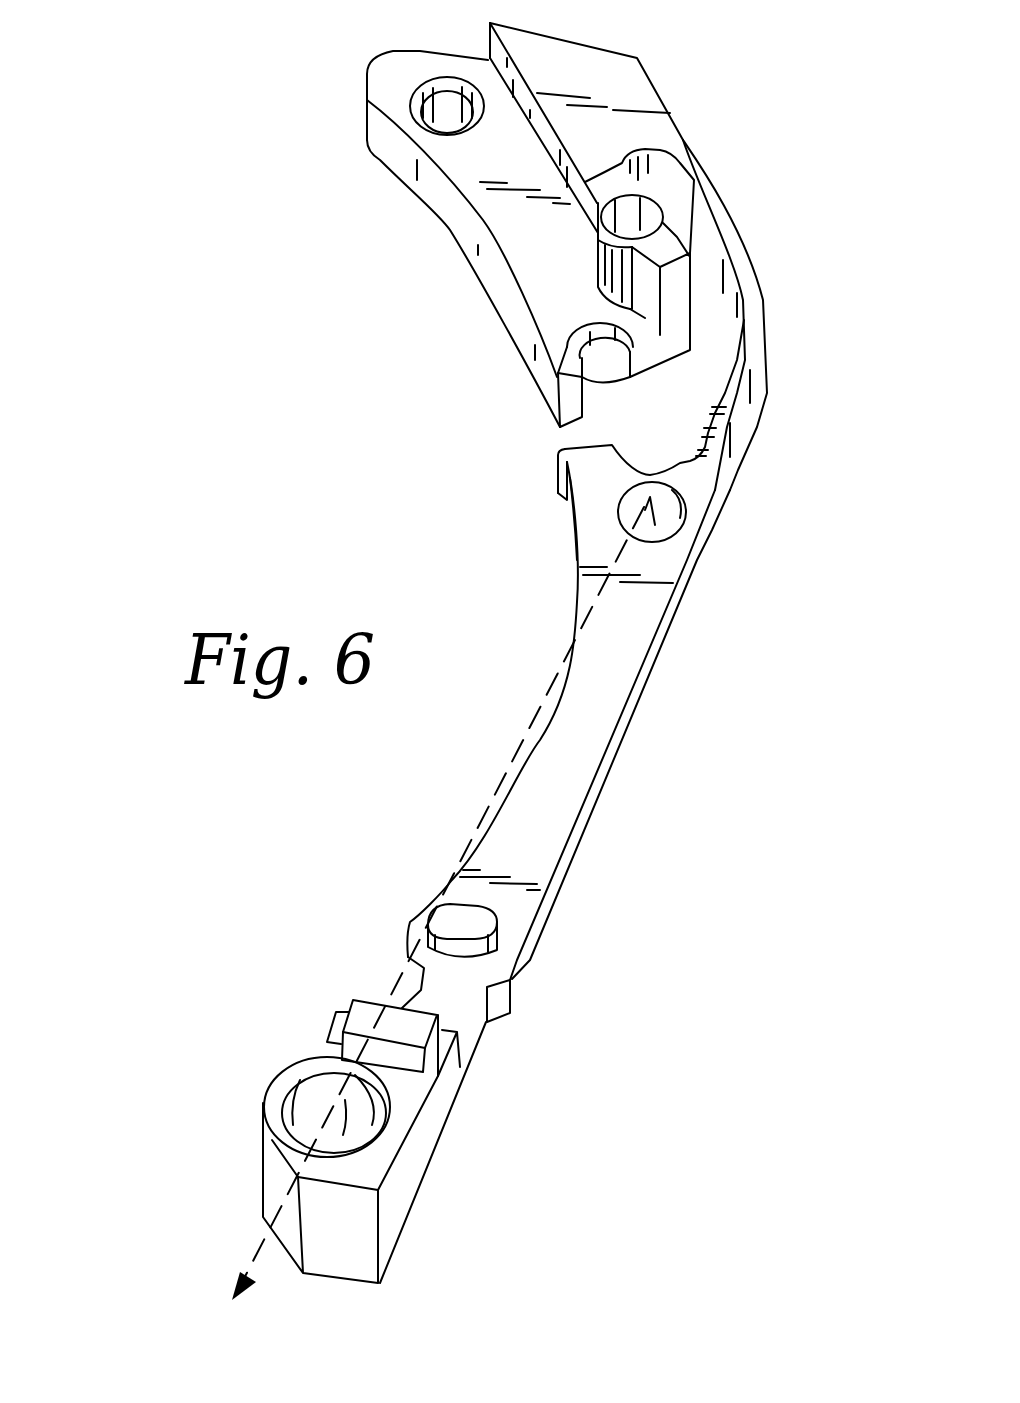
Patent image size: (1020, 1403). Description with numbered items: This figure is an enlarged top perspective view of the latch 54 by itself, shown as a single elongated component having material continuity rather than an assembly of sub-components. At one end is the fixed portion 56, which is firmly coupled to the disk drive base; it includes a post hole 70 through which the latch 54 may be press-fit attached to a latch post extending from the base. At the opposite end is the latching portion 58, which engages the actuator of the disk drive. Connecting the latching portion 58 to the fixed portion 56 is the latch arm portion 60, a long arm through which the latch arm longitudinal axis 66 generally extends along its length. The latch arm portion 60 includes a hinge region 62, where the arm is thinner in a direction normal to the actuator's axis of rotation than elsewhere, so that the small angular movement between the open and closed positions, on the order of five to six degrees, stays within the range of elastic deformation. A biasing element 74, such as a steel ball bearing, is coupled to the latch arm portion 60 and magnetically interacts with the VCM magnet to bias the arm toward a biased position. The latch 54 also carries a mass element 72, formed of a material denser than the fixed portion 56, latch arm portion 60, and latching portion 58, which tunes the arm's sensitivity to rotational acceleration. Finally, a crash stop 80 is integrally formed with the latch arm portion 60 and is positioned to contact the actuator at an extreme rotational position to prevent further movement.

The latch 54 is at (200, 114).
The fixed portion 56 is at (505, 222).
The latching portion 58 is at (477, 923).
The latch arm portion 60 is at (580, 780).
The hinge region 62 is at (720, 213).
The latch arm longitudinal axis 66 is at (257, 1260).
The post hole 70 is at (640, 213).
The mass element 72 is at (315, 1100).
The biasing element 74 is at (670, 507).
The crash stop 80 is at (367, 1013).